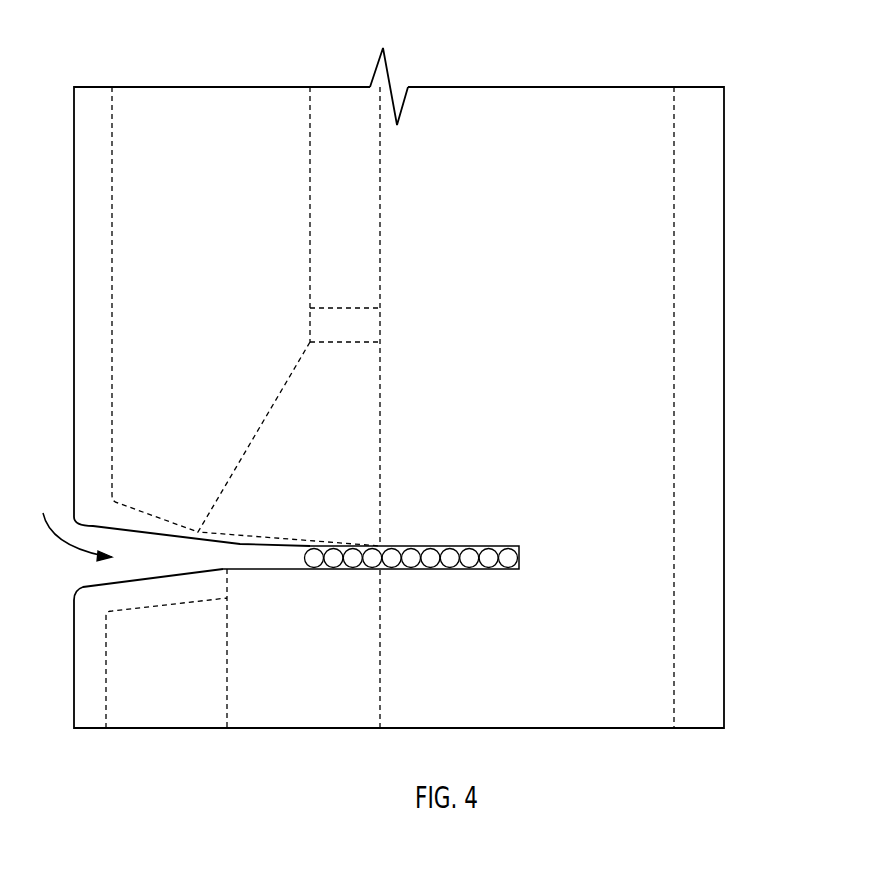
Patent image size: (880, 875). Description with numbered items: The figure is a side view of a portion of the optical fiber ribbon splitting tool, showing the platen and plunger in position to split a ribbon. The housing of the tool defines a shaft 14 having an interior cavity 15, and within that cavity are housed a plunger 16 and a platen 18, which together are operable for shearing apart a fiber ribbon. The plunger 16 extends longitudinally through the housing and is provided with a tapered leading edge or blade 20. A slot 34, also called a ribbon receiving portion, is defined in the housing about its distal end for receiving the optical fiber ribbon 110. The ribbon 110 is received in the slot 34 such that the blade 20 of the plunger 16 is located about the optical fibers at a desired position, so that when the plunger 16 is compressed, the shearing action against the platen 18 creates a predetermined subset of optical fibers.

The shaft 14 is at (724, 203).
The interior cavity 15 is at (578, 108).
The plunger 16 is at (348, 422).
The platen 18 is at (358, 632).
The blade 20 is at (380, 544).
The slot 34 is at (72, 523).
The optical fiber ribbon 110 is at (488, 560).